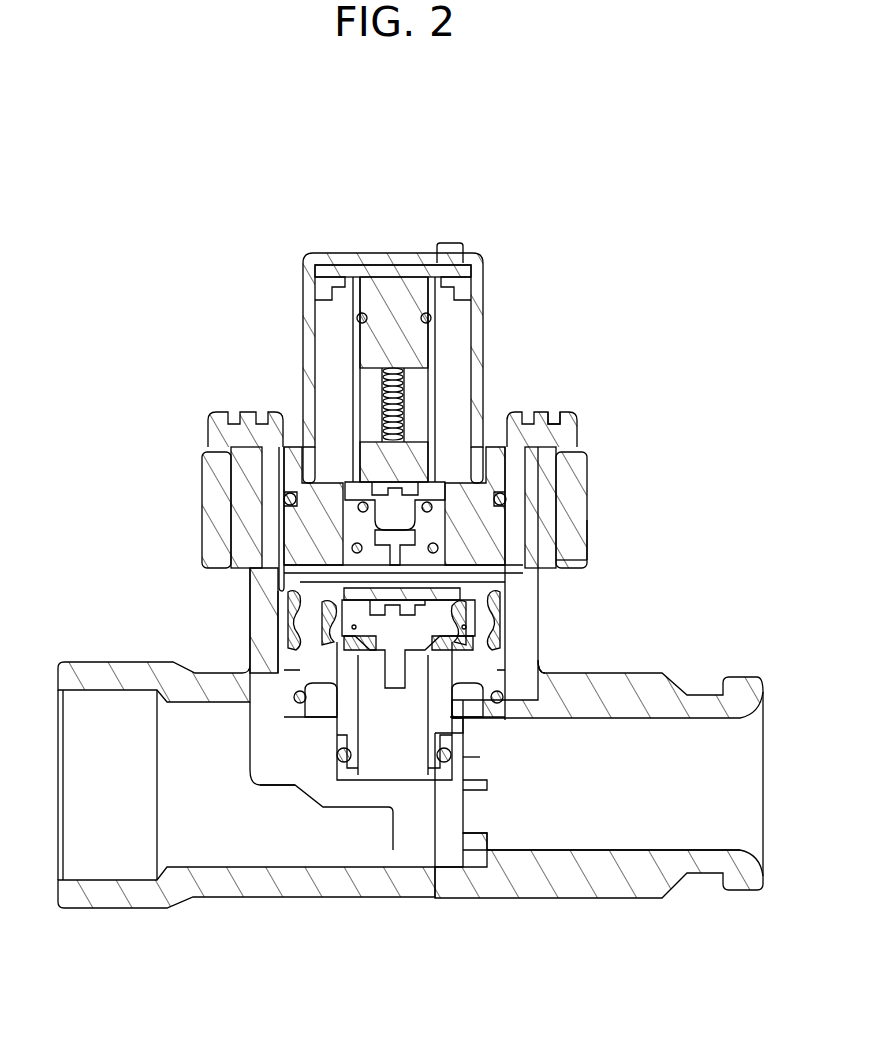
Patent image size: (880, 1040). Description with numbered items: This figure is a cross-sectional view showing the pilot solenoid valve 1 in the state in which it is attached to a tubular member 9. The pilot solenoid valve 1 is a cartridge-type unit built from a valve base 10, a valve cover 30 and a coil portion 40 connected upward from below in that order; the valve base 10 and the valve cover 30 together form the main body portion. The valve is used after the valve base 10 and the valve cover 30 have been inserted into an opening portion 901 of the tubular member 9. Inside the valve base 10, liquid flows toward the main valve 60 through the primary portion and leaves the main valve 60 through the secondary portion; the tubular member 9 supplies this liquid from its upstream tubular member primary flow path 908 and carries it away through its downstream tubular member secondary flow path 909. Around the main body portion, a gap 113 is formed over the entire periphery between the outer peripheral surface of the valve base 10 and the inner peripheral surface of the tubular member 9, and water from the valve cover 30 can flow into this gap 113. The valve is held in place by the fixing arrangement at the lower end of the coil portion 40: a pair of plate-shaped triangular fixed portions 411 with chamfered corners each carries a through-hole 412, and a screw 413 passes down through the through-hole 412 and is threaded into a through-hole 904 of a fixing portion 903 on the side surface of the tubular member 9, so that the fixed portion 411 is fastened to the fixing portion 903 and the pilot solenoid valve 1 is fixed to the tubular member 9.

The pilot solenoid valve 1 is at (338, 164).
The coil portion 40 is at (494, 259).
The through-hole 412 is at (550, 446).
The screw 413 is at (575, 423).
The fixed portion 411 is at (578, 448).
The valve cover 30 is at (522, 494).
The fixing portion 903 is at (587, 543).
The through-hole 904 is at (550, 566).
The opening portion 901 is at (497, 455).
The valve base 10 is at (520, 622).
The main valve 60 is at (312, 651).
The gap 113 is at (540, 657).
The tubular member 9 is at (670, 672).
The tubular member secondary flow path 909 is at (303, 837).
The tubular member primary flow path 908 is at (575, 813).